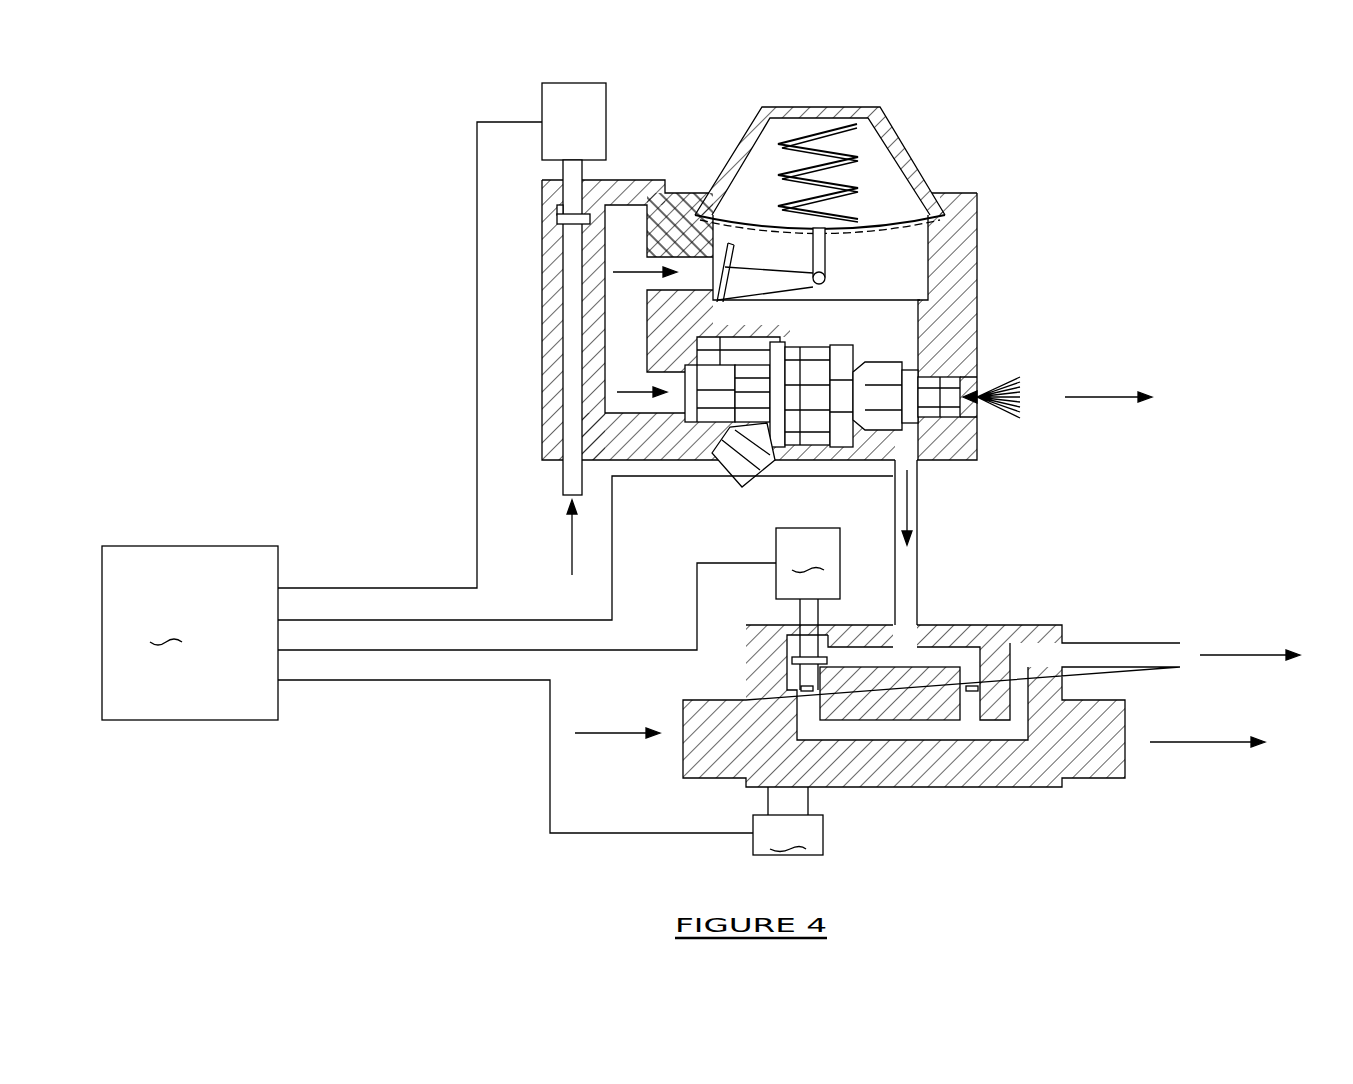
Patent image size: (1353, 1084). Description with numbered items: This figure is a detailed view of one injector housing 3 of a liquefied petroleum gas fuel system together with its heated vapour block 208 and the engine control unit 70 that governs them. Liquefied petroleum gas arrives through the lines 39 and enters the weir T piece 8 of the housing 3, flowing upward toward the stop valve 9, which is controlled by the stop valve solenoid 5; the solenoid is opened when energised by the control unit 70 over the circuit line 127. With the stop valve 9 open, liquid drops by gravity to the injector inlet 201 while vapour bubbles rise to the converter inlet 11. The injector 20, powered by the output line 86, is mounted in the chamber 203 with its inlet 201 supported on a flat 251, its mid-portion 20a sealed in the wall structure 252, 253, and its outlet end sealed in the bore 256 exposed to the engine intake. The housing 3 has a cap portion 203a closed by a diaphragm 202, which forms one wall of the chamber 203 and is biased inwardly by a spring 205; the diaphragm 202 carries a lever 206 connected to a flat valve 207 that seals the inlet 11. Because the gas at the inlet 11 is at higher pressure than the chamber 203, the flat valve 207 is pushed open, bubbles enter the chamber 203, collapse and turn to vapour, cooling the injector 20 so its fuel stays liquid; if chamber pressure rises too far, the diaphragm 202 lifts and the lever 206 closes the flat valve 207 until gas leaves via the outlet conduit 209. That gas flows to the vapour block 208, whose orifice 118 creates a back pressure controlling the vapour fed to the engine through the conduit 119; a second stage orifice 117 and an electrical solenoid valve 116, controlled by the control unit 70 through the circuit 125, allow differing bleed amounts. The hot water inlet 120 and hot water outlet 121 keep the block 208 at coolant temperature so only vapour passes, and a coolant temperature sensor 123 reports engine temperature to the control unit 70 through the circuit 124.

The injector housing 3 is at (1005, 212).
The stop valve solenoid 5 is at (597, 113).
The weir T piece 8 is at (542, 292).
The stop valve 9 is at (557, 220).
The converter inlet 11 is at (680, 248).
The injector 20 is at (775, 460).
The mid-portion of the injector 20a is at (795, 382).
The lines 39 is at (570, 478).
The control unit 70 is at (190, 633).
The output line 86 is at (603, 620).
The electrical solenoid valve 116 is at (808, 609).
The second stage orifice 117 is at (805, 690).
The orifice 118 is at (972, 690).
The conduit 119 is at (1222, 642).
The hot water inlet 120 is at (625, 746).
The hot water outlet 121 is at (1192, 752).
The coolant temperature sensor 123 is at (788, 821).
The circuit 124 is at (423, 682).
The circuit 125 is at (660, 655).
The circuit line 127 is at (317, 588).
The injector inlet 201 is at (647, 460).
The diaphragm 202 is at (860, 165).
The chamber 203 is at (905, 285).
The cap portion 203a is at (807, 107).
The spring 205 is at (895, 215).
The lever 206 is at (822, 253).
The flat valve 207 is at (743, 300).
The vapour block 208 is at (1002, 624).
The outlet conduit 209 is at (920, 582).
The flat 251 is at (697, 458).
The wall structure 252 is at (648, 358).
The wall structure 253 is at (823, 457).
The bore 256 is at (950, 440).